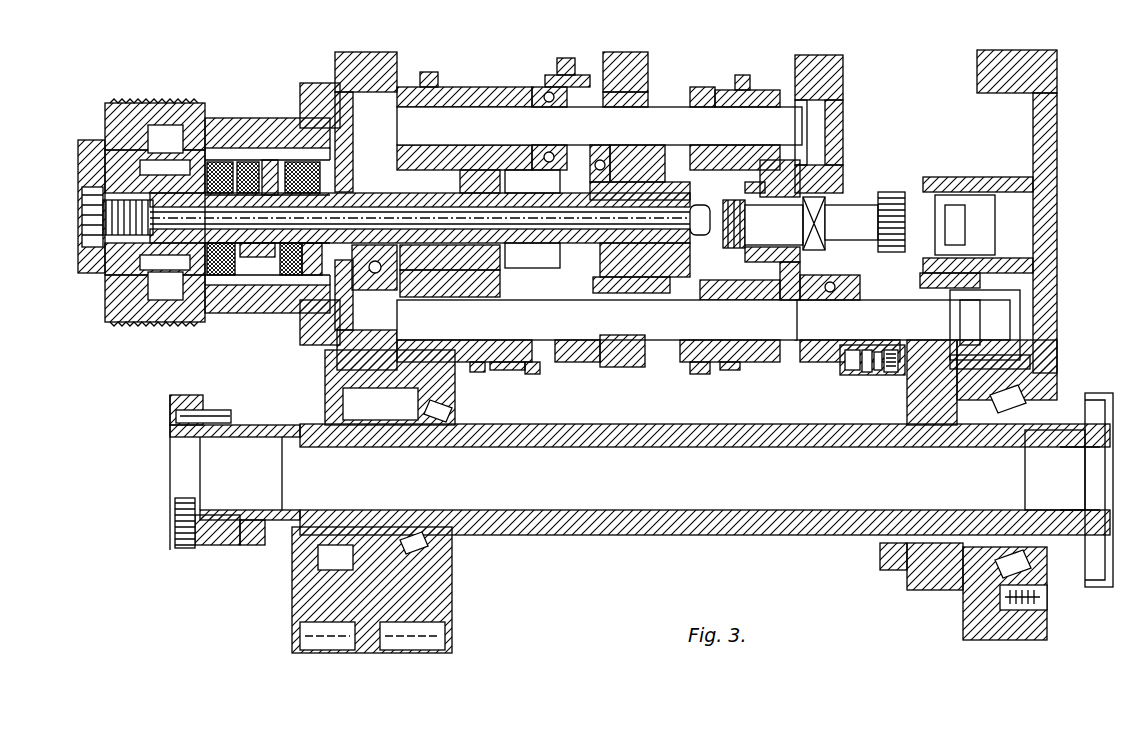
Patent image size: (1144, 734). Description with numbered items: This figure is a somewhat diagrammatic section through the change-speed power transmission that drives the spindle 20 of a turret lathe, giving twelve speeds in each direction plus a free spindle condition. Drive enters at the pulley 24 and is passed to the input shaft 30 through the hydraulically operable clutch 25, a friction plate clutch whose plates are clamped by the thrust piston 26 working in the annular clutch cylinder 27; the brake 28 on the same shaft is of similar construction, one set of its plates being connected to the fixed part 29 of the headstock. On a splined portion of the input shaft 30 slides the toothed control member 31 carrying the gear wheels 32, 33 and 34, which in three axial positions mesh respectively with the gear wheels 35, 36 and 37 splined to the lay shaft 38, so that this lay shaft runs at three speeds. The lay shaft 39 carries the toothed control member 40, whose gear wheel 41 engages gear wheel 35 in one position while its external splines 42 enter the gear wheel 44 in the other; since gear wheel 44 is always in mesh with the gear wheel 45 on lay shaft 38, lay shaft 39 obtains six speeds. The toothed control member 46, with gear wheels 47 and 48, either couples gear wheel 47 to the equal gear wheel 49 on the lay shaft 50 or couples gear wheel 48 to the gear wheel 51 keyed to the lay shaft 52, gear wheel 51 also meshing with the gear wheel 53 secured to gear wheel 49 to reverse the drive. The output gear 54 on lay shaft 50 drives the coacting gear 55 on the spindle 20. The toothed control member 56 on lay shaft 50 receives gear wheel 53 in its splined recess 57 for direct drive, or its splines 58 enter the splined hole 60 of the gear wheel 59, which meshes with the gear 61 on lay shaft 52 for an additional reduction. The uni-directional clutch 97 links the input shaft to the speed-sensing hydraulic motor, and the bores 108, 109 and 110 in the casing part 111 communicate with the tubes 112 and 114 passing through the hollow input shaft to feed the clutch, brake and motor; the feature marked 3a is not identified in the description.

The spindle 20 is at (632, 515).
The pulley 24 is at (178, 313).
The hydraulically operable clutch 25 is at (220, 162).
The thrust piston 26 is at (248, 162).
The annular clutch cylinder 27 is at (270, 160).
The brake 28 is at (290, 275).
The fixed part of the headstock 29 is at (330, 118).
The input shaft 30 is at (545, 205).
The toothed control member 31 is at (425, 245).
The gear wheel 32 is at (430, 272).
The gear wheel 33 is at (475, 170).
The gear wheel 34 is at (512, 282).
The gear wheel 35 is at (373, 501).
The gear wheel 36 is at (475, 372).
The gear wheel 37 is at (532, 374).
The lay shaft 38 is at (518, 362).
The lay shaft 39 is at (462, 118).
The toothed control member 40 is at (456, 78).
The gear wheel 41 is at (428, 72).
The external splines 42 is at (527, 85).
The gear wheel 44 is at (562, 58).
The gear wheel 45 is at (565, 362).
The toothed control member 46 is at (690, 100).
The gear wheel 47 is at (742, 75).
The gear wheel 48 is at (758, 95).
The gear wheel 49 is at (700, 374).
The lay shaft 50 is at (728, 345).
The gear wheel 51 is at (800, 275).
The lay shaft 52 is at (784, 236).
The gear wheel 53 is at (765, 345).
The output gear 54 is at (948, 350).
The coacting gear 55 is at (938, 395).
The toothed control member 56 is at (836, 375).
The splined recess 57 is at (832, 368).
The splines 58 is at (860, 372).
The gear wheel 59 is at (876, 375).
The splined hole 60 is at (866, 370).
The gear 61 is at (890, 210).
The uni-directional clutch 97 is at (312, 300).
The bore 108 is at (660, 170).
The bore 109 is at (640, 168).
The bore 110 is at (608, 140).
The part of the casing 111 is at (628, 340).
The tube 112 is at (400, 250).
The tube 114 is at (240, 258).
The gear 3a is at (532, 221).